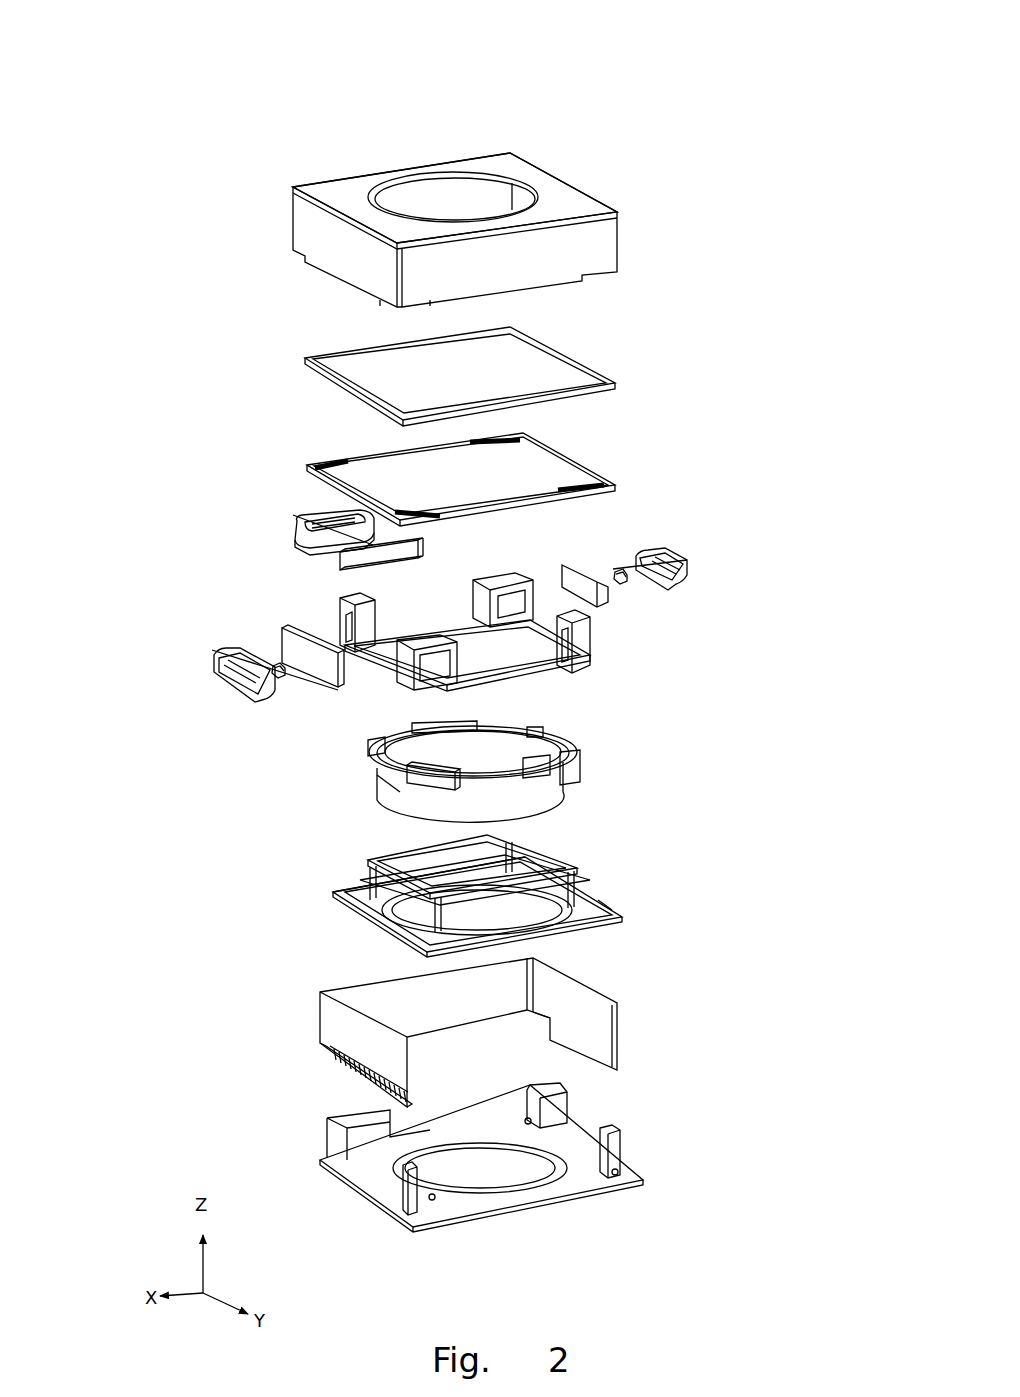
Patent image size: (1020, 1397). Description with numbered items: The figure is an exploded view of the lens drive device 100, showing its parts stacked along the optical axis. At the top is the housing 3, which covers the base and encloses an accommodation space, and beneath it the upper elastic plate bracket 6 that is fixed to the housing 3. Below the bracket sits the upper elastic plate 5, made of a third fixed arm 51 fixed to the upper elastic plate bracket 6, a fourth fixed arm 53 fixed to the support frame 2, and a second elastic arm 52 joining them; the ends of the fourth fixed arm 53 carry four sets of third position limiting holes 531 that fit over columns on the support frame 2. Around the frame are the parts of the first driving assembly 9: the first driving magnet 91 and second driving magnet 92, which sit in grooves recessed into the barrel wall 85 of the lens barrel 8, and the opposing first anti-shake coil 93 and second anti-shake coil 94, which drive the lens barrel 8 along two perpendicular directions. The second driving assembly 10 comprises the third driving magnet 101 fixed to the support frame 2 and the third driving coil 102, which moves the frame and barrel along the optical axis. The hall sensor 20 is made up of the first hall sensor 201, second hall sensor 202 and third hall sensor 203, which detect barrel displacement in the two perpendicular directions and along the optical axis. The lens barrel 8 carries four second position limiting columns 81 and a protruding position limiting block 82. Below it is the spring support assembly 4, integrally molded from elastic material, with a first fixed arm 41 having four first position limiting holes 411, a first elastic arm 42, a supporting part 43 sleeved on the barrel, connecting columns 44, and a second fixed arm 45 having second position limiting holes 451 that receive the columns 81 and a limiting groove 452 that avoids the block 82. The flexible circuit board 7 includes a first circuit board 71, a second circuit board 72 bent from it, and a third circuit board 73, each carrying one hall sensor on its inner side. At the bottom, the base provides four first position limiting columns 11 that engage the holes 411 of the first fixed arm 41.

The lens drive device 100 is at (474, 37).
The housing 3 is at (320, 243).
The upper elastic plate bracket 6 is at (325, 365).
The upper elastic plate 5 is at (748, 366).
The third fixed arm 51 is at (573, 450).
The second elastic arm 52 is at (610, 478).
The fourth fixed arm 53 is at (593, 465).
The third position limiting holes 531 is at (350, 450).
The first driving assembly 9 is at (318, 500).
The second anti-shake coil 94 is at (313, 518).
The second hall sensor 202 is at (295, 528).
The second driving magnet 92 is at (340, 560).
The first driving magnet 91 is at (582, 565).
The first hall sensor 201 is at (622, 575).
The first anti-shake coil 93 is at (672, 585).
The hall sensor 20 is at (632, 590).
The support frame 2 is at (590, 655).
The second driving assembly 10 is at (100, 590).
The third driving magnet 101 is at (285, 635).
The third driving coil 102 is at (215, 663).
The third hall sensor 203 is at (272, 690).
The lens barrel 8 is at (575, 795).
The position limiting block 82 is at (545, 735).
The second position limiting columns 81 is at (378, 752).
The barrel wall 85 is at (398, 790).
The spring support assembly 4 is at (200, 808).
The second fixed arm 45 is at (372, 858).
The second position limiting holes 451 is at (540, 853).
The limiting groove 452 is at (565, 870).
The connecting columns 44 is at (378, 880).
The first elastic arm 42 is at (372, 893).
The supporting part 43 is at (365, 905).
The first fixed arm 41 is at (395, 930).
The first position limiting holes 411 is at (600, 905).
The flexible circuit board 7 is at (335, 1025).
The second circuit board 72 is at (495, 990).
The first circuit board 71 is at (612, 1025).
The third circuit board 73 is at (353, 1053).
The first position limiting columns 11 is at (600, 1160).